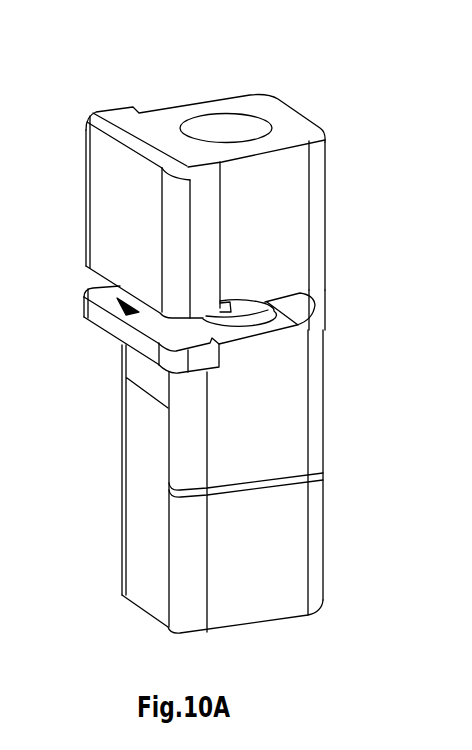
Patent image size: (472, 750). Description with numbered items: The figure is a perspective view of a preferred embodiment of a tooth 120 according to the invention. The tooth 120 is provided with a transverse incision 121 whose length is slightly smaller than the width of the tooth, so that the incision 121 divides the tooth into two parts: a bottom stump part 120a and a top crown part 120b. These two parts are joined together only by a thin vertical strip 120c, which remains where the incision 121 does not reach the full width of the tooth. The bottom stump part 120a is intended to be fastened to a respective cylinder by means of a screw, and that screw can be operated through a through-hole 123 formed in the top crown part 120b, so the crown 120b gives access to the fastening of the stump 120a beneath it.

The tooth 120 is at (357, 157).
The bottom stump part 120a is at (278, 437).
The top crown part 120b is at (104, 250).
The thin vertical strip 120c is at (322, 308).
The transverse incision 121 is at (118, 302).
The through-hole 123 is at (208, 127).